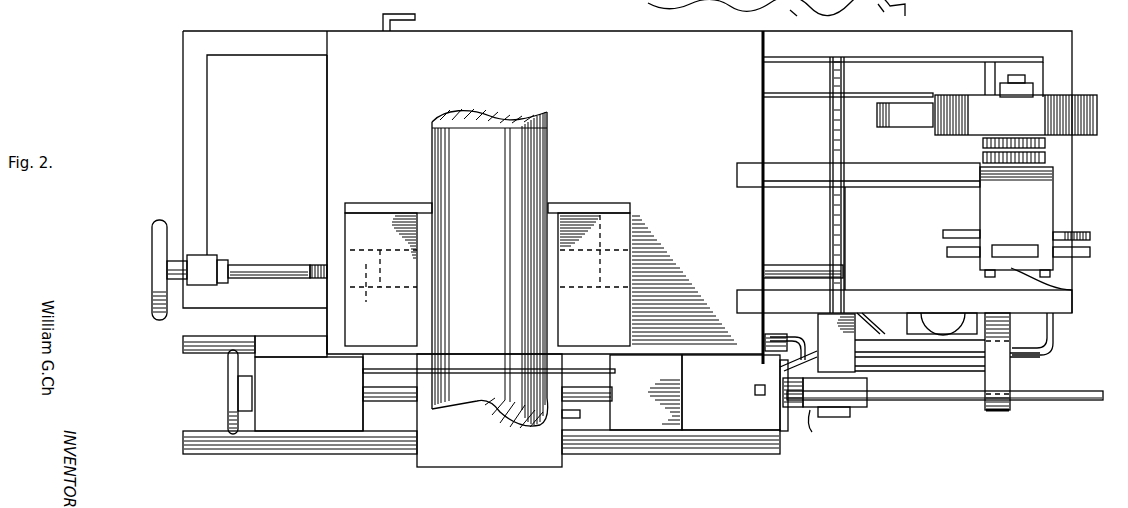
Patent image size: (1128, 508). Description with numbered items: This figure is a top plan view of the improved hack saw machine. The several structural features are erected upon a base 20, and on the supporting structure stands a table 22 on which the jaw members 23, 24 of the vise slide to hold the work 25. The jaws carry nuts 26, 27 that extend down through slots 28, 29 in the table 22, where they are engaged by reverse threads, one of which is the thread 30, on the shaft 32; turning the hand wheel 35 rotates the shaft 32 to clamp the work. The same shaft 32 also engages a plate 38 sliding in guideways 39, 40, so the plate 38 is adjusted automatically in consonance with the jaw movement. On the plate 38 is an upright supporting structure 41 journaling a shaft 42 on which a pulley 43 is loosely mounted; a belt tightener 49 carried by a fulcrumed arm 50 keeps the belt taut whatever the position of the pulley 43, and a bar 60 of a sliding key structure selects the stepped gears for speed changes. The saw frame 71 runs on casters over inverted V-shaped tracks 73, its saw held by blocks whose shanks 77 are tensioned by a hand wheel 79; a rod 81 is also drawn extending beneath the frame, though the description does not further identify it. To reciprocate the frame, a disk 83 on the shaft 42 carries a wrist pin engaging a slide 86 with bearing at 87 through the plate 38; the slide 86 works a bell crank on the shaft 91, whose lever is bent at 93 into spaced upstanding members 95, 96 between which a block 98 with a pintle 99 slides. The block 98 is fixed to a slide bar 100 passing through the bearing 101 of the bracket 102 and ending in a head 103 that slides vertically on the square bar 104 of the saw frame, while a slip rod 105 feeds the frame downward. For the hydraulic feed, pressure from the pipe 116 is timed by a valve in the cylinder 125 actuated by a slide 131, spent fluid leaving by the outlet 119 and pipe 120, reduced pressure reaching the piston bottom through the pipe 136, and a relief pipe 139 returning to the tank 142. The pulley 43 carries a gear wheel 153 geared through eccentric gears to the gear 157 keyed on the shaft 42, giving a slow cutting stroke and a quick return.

The base 20 is at (943, 63).
The table 22 is at (515, 44).
The jaw member 23 is at (378, 220).
The jaw member 24 is at (578, 222).
The work 25 is at (549, 140).
The nut 26 is at (366, 320).
The nut 27 is at (640, 256).
The slot 28 is at (362, 203).
The slot 29 is at (631, 212).
The reverse thread 30 is at (312, 265).
The shaft 32 is at (240, 265).
The hand wheel 35 is at (151, 262).
The plate 38 is at (870, 192).
The guideway 39 is at (793, 182).
The guideway 40 is at (745, 290).
The supporting structure 41 is at (1040, 200).
The shaft 42 is at (1017, 75).
The pulley 43 is at (1081, 95).
The belt tightener 49 is at (918, 122).
The arm 50 is at (858, 95).
The bar 60 is at (381, 17).
The saw frame 71 is at (270, 346).
The tracks 73 is at (183, 340).
The shank 77 is at (253, 394).
The hand wheel 79 is at (227, 372).
The rod 81 is at (466, 373).
The disk 83 is at (1073, 233).
The slide 86 is at (1010, 250).
The bearing 87 is at (1072, 290).
The shaft 91 is at (845, 226).
The bend 93 is at (856, 341).
The upstanding member 95 is at (856, 375).
The upstanding member 96 is at (851, 411).
The block 98 is at (819, 429).
The pintle 99 is at (845, 418).
The slide bar 100 is at (930, 400).
The bearing 101 is at (995, 406).
The bracket 102 is at (1011, 375).
The head 103 is at (789, 410).
The bar 104 is at (756, 396).
The slip rod 105 is at (395, 395).
The pipe 116 is at (779, 371).
The outlet 119 is at (812, 18).
The pipe 120 is at (893, 15).
The cylinder 125 is at (910, 316).
The slide 131 is at (937, 317).
The pipe 136 is at (782, 331).
The relief pipe 139 is at (925, 362).
The tank 142 is at (1037, 72).
The gear wheel 153 is at (1046, 143).
The gear 157 is at (1046, 158).